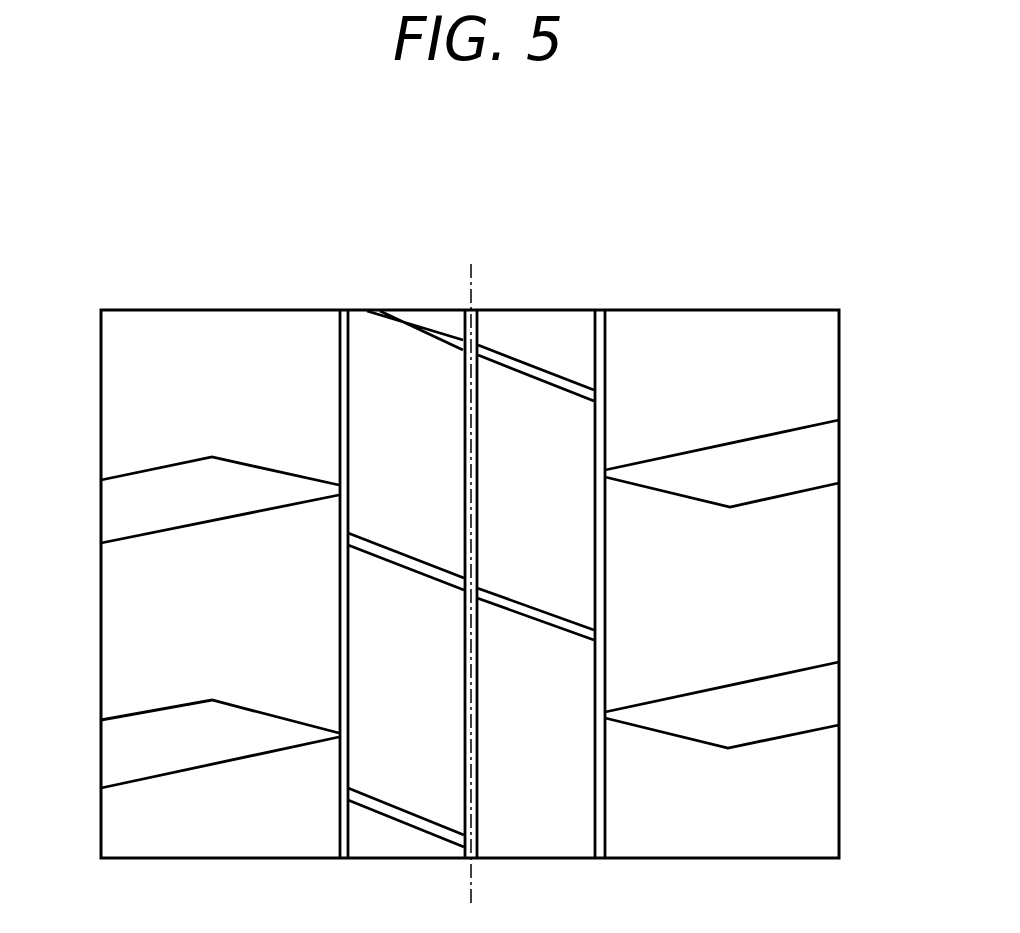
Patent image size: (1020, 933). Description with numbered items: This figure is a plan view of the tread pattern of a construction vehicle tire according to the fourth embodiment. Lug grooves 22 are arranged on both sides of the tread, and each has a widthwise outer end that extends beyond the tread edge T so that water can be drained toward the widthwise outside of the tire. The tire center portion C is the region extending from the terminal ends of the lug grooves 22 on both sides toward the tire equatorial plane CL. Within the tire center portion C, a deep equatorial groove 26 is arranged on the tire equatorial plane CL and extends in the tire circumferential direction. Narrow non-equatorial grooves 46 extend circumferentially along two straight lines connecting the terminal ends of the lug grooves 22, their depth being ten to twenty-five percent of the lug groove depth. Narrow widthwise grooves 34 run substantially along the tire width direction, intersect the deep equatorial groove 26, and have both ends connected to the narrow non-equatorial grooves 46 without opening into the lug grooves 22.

The tread edge T is at (101, 348).
The tire center portion C is at (368, 208).
The tire equatorial plane CL is at (472, 279).
The deep equatorial groove 26 is at (474, 307).
The narrow non-equatorial grooves 46 is at (338, 342).
The narrow widthwise grooves 34 is at (563, 373).
The lug grooves 22 is at (106, 500).